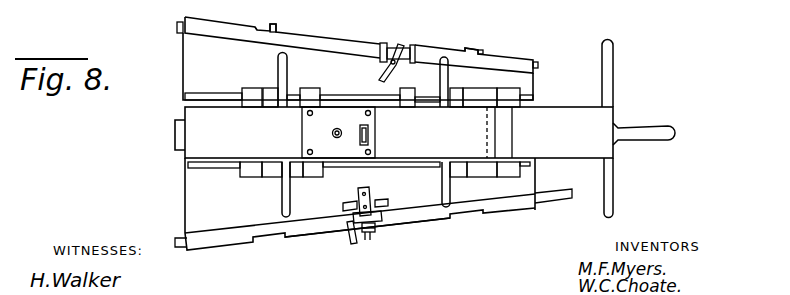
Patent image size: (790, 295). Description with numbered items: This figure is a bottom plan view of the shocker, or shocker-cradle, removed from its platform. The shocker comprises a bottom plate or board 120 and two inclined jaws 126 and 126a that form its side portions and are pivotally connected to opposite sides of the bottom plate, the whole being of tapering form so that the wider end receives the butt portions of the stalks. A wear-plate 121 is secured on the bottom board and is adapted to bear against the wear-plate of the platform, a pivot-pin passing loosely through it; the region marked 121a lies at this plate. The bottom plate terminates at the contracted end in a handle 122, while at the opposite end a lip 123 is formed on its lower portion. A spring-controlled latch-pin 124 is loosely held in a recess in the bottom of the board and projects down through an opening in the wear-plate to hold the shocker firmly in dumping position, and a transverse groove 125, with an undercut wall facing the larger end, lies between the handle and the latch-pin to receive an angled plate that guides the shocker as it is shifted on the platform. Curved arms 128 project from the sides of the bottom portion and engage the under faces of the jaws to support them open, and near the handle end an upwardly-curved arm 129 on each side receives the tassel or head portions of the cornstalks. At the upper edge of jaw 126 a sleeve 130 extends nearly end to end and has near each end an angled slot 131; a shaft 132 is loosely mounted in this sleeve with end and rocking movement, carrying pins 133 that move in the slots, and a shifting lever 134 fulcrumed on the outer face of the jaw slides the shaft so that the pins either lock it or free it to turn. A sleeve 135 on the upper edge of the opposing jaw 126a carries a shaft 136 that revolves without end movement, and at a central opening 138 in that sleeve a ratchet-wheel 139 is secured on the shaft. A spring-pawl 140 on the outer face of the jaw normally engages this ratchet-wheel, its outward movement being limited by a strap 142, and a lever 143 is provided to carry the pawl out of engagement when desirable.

The bottom plate or board 120 is at (399, 132).
The wear-plate 121 is at (338, 132).
The pivot screw 121a is at (338, 144).
The handle 122 is at (648, 128).
The lip 123 is at (175, 123).
The latch-pin 124 is at (403, 150).
The transverse groove 125 is at (510, 146).
The jaw 126 is at (355, 61).
The jaw 126a is at (355, 202).
The curved arms 128 is at (283, 66).
The upwardly-curved arm 129 is at (612, 85).
The sleeve 130 is at (359, 45).
The angled slot 131 is at (258, 30).
The shaft 132 is at (400, 45).
The pins 133 is at (274, 29).
The shifting lever 134 is at (387, 77).
The sleeve 135 is at (323, 228).
The shaft 136 is at (557, 199).
The central opening 138 is at (377, 229).
The ratchet-wheel 139 is at (367, 233).
The spring-pawl 140 is at (371, 196).
The strap 142 is at (362, 188).
The lever 143 is at (351, 244).